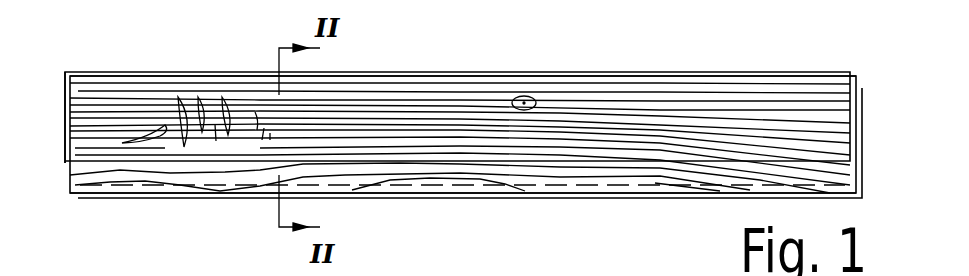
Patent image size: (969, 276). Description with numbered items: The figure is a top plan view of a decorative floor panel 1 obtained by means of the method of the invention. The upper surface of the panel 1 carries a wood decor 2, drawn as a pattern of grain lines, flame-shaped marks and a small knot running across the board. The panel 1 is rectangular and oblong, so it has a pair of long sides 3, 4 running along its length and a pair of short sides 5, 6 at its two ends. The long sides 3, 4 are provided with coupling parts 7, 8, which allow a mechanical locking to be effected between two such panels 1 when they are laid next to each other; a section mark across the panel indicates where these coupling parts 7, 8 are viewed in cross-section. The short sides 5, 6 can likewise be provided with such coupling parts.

The floor panel 1 is at (168, 207).
The wood decor 2 is at (463, 127).
The long side 3 is at (420, 72).
The long side 4 is at (417, 200).
The short side 5 is at (67, 163).
The short side 6 is at (863, 180).
The coupling part 7 is at (573, 77).
The coupling part 8 is at (540, 197).